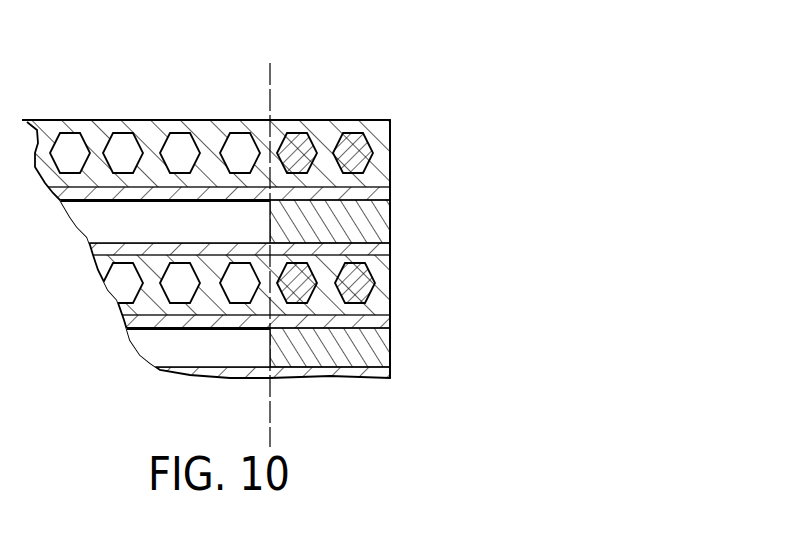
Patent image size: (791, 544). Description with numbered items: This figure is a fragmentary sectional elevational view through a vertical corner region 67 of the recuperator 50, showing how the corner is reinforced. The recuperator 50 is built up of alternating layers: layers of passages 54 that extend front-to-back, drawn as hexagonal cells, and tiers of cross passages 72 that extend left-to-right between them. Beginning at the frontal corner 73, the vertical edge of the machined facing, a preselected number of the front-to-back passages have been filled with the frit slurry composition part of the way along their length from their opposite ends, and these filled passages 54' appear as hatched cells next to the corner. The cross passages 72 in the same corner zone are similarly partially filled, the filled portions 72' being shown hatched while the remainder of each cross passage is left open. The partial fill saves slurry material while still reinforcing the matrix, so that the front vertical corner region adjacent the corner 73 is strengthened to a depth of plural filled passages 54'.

The recuperator 50 is at (187, 100).
The passages 54 is at (154, 193).
The filled passages 54' is at (374, 185).
The corner region 67 is at (390, 294).
The cross passages 72 is at (138, 307).
The partially filled cross passages 72' is at (373, 281).
The frontal corner 73 is at (400, 113).